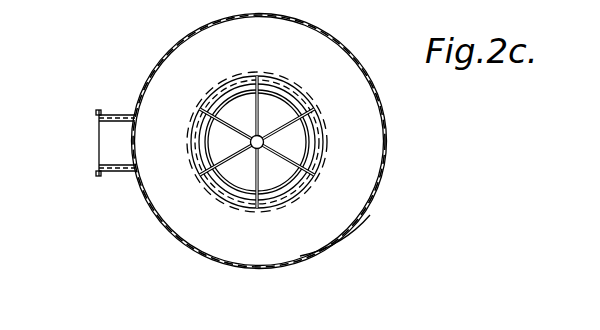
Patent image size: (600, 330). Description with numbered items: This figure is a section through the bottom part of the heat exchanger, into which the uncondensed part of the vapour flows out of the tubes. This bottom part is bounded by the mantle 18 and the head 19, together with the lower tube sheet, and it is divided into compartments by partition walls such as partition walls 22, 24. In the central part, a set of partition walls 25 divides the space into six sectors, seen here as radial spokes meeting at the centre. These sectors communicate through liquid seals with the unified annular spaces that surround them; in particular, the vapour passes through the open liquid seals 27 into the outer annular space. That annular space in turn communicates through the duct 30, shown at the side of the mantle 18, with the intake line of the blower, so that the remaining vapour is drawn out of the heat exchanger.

The mantle 18 is at (329, 37).
The head 19 is at (271, 186).
The partition wall 22 is at (318, 121).
The partition wall 24 is at (343, 209).
The partition walls 25 is at (282, 157).
The liquid seals 27 is at (226, 187).
The duct 30 is at (110, 133).